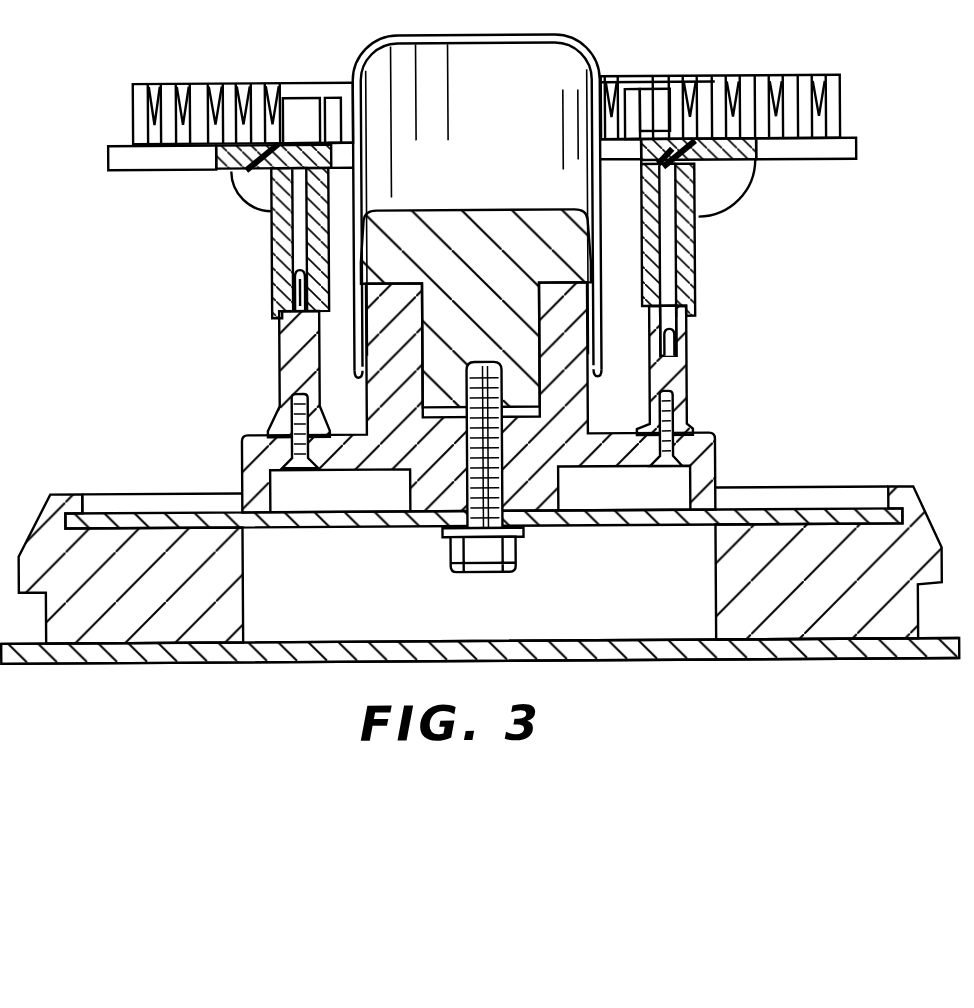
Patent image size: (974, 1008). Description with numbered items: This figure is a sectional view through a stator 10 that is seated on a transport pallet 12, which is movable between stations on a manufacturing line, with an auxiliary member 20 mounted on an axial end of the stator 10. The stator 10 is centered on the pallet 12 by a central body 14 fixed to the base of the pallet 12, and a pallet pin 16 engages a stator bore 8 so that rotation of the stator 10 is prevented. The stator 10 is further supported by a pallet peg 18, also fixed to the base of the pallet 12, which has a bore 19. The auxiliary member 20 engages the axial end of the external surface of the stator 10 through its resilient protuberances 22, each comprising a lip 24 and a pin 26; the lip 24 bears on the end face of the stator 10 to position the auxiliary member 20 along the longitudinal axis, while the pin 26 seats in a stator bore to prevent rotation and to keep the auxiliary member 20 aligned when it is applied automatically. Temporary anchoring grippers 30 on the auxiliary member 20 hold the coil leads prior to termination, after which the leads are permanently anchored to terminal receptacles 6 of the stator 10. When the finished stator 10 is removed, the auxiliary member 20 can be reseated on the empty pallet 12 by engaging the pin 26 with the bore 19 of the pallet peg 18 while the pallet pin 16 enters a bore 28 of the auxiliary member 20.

The terminal receptacles 6 is at (337, 105).
The stator bore 8 is at (668, 299).
The stator 10 is at (297, 237).
The transport pallet 12 is at (920, 540).
The central body 14 is at (512, 220).
The pallet pin 16 is at (297, 297).
The pallet peg 18 is at (688, 341).
The bore 19 is at (672, 354).
The auxiliary member 20 is at (121, 163).
The resilient protuberances 22 is at (243, 164).
The lip 24 is at (648, 142).
The pin 26 is at (672, 160).
The bore 28 is at (273, 142).
The temporary anchoring grippers 30 is at (174, 82).